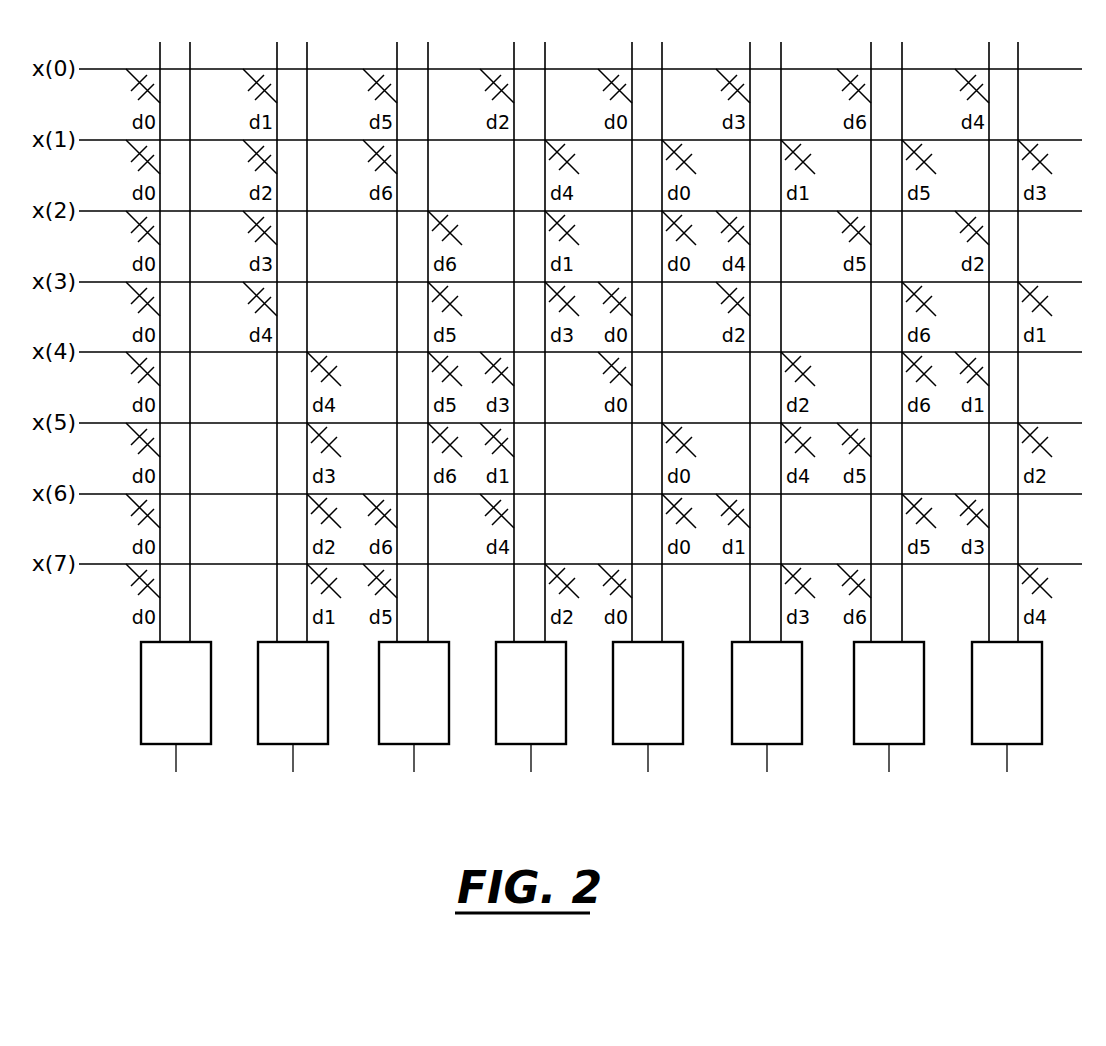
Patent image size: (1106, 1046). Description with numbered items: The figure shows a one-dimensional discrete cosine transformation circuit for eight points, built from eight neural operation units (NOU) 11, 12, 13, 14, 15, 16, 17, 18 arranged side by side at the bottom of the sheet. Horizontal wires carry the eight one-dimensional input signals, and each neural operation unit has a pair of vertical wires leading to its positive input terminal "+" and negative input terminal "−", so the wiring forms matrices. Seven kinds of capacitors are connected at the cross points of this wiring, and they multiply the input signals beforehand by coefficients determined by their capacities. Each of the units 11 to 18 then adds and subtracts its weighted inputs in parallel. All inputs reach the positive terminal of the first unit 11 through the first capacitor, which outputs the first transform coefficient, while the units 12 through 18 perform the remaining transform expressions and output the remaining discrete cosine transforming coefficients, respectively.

The neural operation unit 11 is at (201, 745).
The neural operation unit 12 is at (318, 745).
The neural operation unit 13 is at (439, 745).
The neural operation unit 14 is at (556, 745).
The neural operation unit 15 is at (673, 745).
The neural operation unit 16 is at (792, 745).
The neural operation unit 17 is at (914, 745).
The neural operation unit 18 is at (1032, 745).